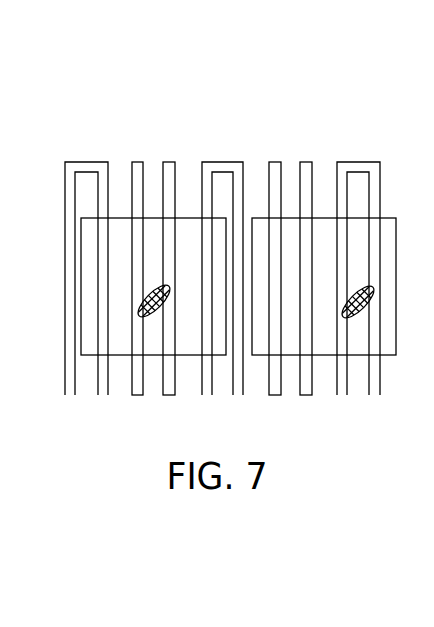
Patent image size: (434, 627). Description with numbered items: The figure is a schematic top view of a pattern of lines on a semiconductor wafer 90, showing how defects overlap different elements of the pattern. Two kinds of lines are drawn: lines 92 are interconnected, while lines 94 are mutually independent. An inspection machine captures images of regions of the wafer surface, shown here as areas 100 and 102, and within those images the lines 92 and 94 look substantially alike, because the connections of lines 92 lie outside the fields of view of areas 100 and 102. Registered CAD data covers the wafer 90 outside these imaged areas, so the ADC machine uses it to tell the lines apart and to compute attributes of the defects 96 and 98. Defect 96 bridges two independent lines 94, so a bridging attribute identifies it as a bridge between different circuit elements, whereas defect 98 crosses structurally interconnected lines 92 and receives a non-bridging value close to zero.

The semiconductor wafer 90 is at (125, 73).
The lines 92 is at (66, 162).
The lines 94 is at (140, 162).
The defect 96 is at (157, 312).
The defect 98 is at (358, 314).
The area 100 is at (113, 218).
The area 102 is at (323, 218).